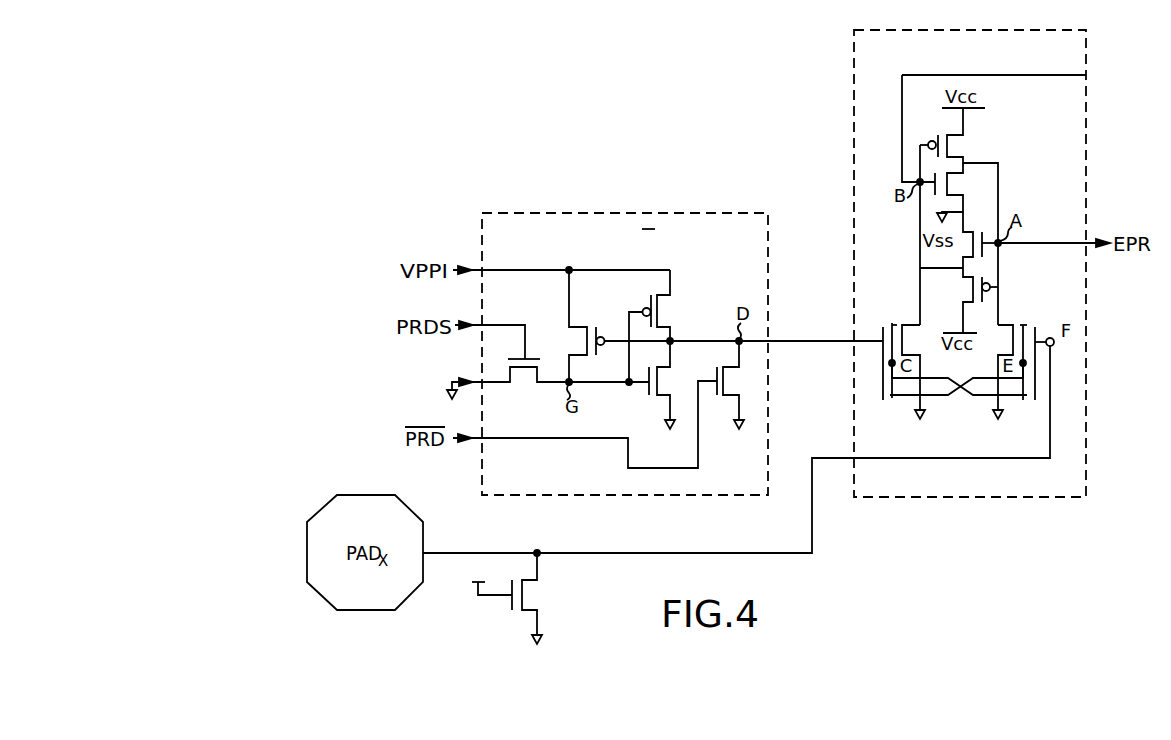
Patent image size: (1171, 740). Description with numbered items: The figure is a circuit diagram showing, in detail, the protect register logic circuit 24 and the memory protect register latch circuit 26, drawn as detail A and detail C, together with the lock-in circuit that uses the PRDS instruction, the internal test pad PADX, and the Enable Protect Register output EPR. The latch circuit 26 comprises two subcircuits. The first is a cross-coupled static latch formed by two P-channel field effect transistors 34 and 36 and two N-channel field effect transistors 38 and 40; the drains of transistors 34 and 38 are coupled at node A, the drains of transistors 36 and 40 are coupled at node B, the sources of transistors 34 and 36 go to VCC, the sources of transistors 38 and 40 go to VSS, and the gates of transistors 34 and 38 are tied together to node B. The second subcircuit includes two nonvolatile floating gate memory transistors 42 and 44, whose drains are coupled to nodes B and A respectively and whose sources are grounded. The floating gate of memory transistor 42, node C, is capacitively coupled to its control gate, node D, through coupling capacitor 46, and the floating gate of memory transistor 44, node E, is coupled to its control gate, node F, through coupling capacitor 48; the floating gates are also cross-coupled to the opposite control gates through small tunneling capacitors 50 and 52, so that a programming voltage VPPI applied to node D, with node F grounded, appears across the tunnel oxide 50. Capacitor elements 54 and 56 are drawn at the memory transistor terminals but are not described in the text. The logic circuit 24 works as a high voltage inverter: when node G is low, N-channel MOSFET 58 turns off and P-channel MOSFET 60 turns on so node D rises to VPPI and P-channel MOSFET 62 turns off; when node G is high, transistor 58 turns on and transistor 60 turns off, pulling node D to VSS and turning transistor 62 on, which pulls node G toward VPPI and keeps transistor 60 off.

The protect register logic circuit 24 is at (510, 227).
The memory protect register latch circuit 26 is at (908, 490).
The P-channel field effect transistor 34 is at (956, 150).
The P-channel field effect transistor 36 is at (963, 296).
The N-channel field effect transistor 38 is at (955, 183).
The N-channel field effect transistor 40 is at (963, 247).
The nonvolatile memory transistor 42 is at (912, 340).
The nonvolatile memory transistor 44 is at (1000, 340).
The coupling capacitor 46 is at (886, 356).
The coupling capacitor 48 is at (1028, 356).
The tunneling capacitor 50 is at (1028, 400).
The tunneling capacitor 52 is at (890, 400).
The transistor terminal 54 is at (893, 324).
The transistor terminal 56 is at (1030, 325).
The N-channel MOSFET 58 is at (664, 385).
The P-channel MOSFET 60 is at (668, 311).
The P-channel MOSFET 62 is at (583, 322).